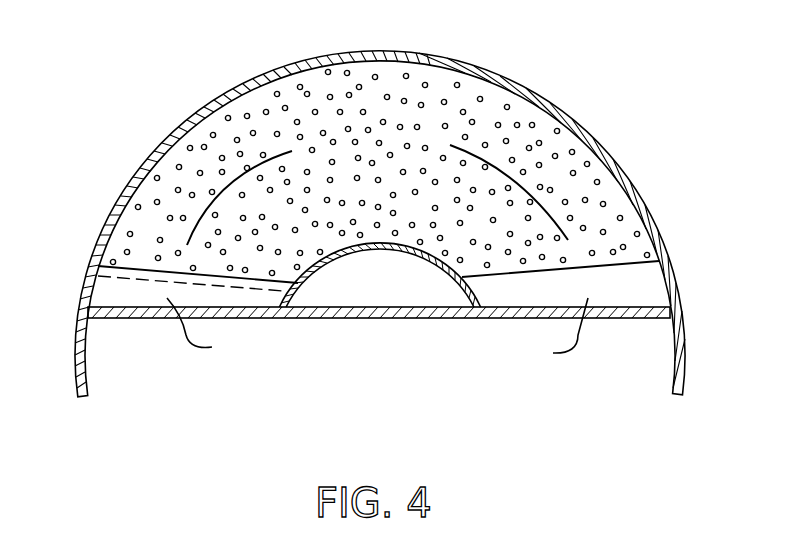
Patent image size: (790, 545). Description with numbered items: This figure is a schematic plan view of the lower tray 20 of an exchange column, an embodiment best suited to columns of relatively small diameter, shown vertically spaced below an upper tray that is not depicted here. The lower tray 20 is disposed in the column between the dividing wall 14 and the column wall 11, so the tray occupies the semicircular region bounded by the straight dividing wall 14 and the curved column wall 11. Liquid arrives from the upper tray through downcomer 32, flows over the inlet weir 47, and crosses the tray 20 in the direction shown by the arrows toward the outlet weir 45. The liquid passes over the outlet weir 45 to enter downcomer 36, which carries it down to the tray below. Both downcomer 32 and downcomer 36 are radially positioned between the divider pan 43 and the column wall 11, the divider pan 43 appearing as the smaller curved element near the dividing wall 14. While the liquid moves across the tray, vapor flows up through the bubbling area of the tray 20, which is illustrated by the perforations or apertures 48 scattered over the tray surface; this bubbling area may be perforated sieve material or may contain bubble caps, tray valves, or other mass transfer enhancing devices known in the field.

The column wall 11 is at (228, 94).
The dividing wall 14 is at (123, 318).
The lower tray 20 is at (399, 229).
The downcomer 32 is at (204, 329).
The downcomer 36 is at (555, 333).
The divider pan 43 is at (360, 249).
The outlet weir 45 is at (607, 265).
The inlet weir 47 is at (143, 266).
The perforations or apertures 48 is at (606, 205).